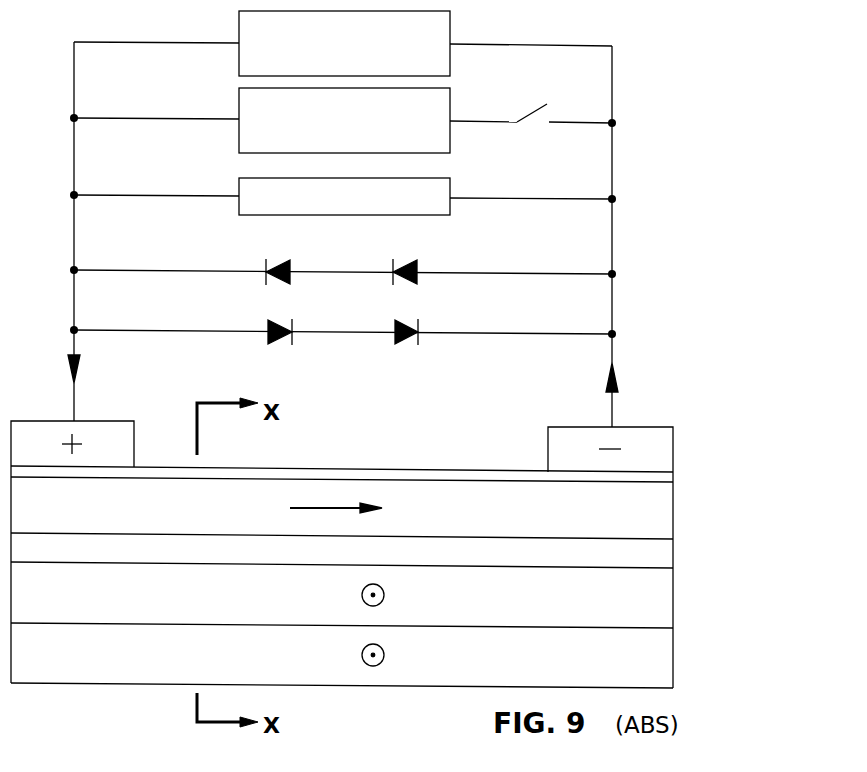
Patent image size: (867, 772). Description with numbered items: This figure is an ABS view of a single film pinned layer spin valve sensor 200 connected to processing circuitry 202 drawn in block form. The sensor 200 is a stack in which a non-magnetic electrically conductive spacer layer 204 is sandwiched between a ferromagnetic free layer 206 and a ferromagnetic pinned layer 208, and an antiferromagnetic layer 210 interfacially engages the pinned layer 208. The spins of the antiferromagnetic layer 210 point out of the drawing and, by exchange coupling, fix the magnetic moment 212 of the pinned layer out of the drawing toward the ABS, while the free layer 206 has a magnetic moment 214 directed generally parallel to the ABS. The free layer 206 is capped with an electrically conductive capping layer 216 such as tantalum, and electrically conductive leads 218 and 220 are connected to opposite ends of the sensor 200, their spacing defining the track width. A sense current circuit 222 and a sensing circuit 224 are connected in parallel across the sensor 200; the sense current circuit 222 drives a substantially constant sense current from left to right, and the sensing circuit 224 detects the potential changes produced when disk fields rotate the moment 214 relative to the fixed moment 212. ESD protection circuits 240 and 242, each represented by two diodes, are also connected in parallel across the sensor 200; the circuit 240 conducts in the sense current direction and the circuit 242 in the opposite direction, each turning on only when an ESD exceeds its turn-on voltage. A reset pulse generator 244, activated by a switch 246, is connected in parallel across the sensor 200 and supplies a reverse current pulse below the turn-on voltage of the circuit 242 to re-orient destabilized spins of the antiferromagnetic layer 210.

The spin valve sensor 200 is at (684, 395).
The processing circuitry 202 is at (666, 103).
The spacer layer 204 is at (673, 552).
The free layer 206 is at (673, 512).
The pinned layer 208 is at (673, 600).
The antiferromagnetic layer 210 is at (673, 655).
The magnetic moment of the pinned layer 212 is at (362, 595).
The magnetic moment of the free layer 214 is at (320, 508).
The capping layer 216 is at (673, 478).
The electrically conductive lead 218 is at (111, 427).
The electrically conductive lead 220 is at (673, 440).
The sense current circuit 222 is at (239, 207).
The sensing circuit 224 is at (239, 62).
The ESD protection circuit 240 is at (395, 322).
The ESD protection circuit 242 is at (393, 262).
The reset pulse generator circuit 244 is at (239, 138).
The switch 246 is at (535, 117).